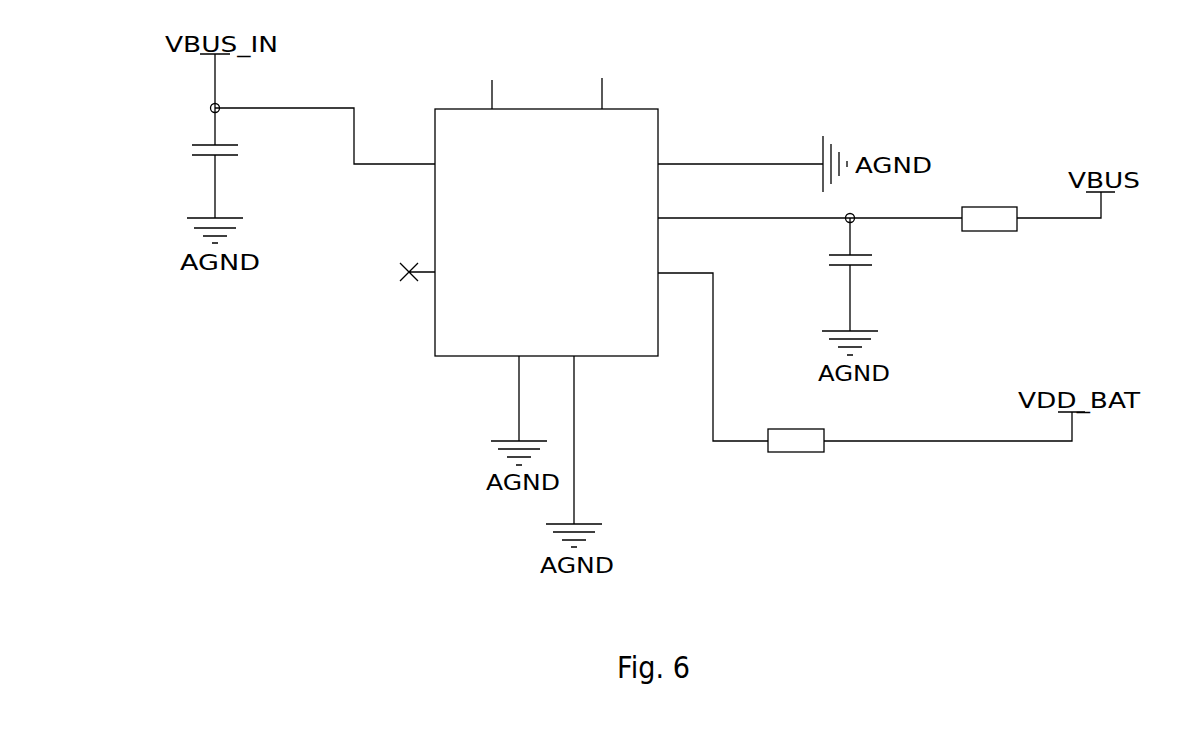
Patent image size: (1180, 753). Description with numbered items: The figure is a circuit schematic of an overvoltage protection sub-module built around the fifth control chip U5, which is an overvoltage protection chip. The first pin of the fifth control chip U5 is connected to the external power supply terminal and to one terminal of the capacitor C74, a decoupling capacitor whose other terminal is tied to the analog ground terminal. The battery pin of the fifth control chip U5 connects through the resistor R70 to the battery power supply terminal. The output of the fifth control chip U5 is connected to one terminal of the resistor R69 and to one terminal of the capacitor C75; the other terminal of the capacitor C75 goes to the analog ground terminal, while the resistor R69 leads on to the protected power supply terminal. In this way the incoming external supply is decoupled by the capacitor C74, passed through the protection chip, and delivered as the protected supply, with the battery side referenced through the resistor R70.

The fifth control chip U5 is at (545, 294).
The capacitor C74 is at (238, 179).
The capacitor C75 is at (873, 274).
The resistor R69 is at (988, 208).
The resistor R70 is at (796, 430).